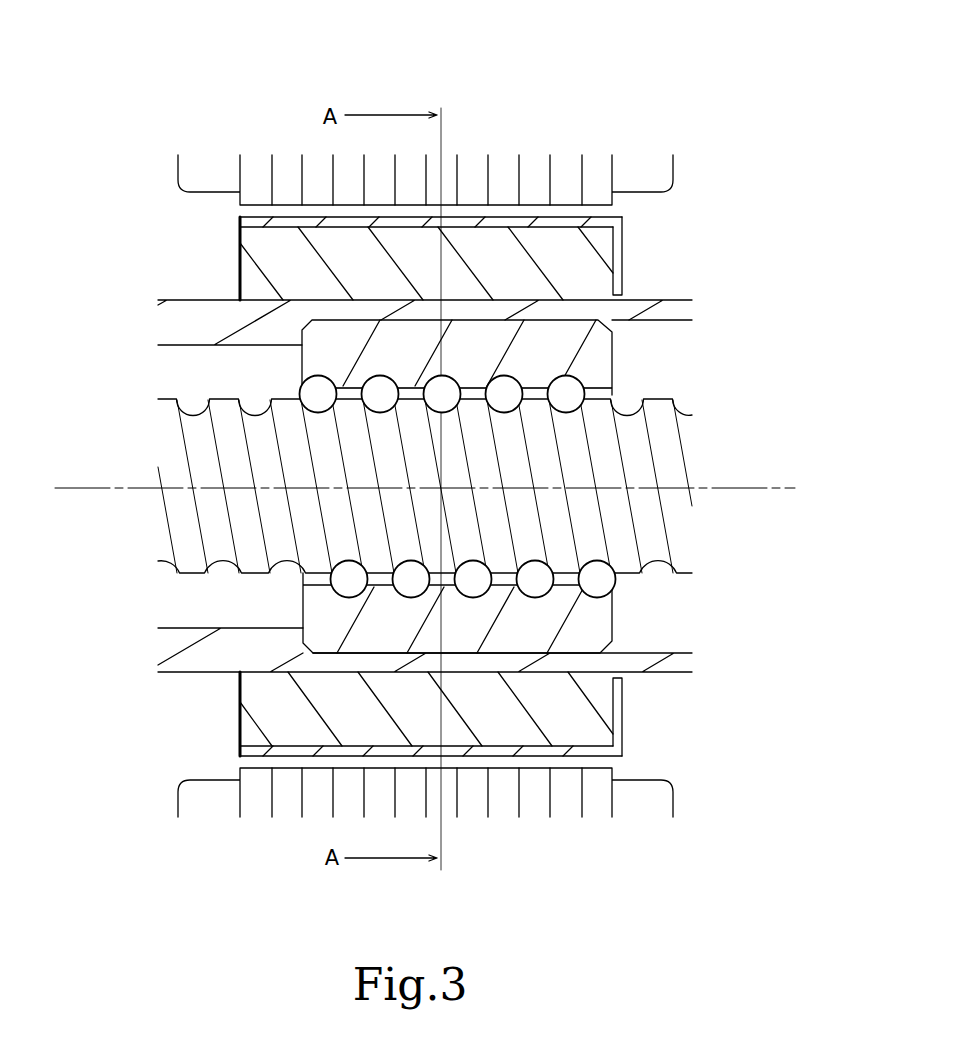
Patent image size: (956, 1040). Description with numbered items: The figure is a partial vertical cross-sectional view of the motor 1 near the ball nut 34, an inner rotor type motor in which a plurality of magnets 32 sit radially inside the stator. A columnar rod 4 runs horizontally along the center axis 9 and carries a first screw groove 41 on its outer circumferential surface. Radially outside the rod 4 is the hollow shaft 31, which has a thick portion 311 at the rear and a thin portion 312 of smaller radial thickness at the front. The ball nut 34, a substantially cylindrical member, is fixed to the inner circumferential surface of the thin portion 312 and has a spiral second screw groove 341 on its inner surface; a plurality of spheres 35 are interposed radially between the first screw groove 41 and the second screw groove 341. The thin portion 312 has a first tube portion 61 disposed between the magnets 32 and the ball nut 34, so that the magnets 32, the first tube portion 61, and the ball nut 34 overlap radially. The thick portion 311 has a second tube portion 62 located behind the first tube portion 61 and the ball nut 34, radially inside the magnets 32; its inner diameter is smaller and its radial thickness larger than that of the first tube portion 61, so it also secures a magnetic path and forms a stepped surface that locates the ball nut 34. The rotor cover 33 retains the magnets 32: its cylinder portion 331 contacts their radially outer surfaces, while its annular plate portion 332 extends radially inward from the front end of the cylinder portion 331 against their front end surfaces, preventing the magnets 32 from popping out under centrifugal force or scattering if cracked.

The motor 1 is at (241, 99).
The rod 4 is at (430, 515).
The center axis 9 is at (100, 487).
The hollow shaft 31 is at (432, 534).
The thick portion 311 is at (181, 356).
The thin portion 312 is at (678, 341).
The magnets 32 is at (493, 250).
The rotor cover 33 is at (512, 730).
The cylinder portion 331 is at (557, 780).
The annular plate portion 332 is at (617, 692).
The ball nut 34 is at (374, 486).
The second screw groove 341 is at (354, 587).
The spheres 35 is at (533, 582).
The first screw groove 41 is at (218, 569).
The first tube portion 61 is at (490, 282).
The second tube portion 62 is at (270, 312).